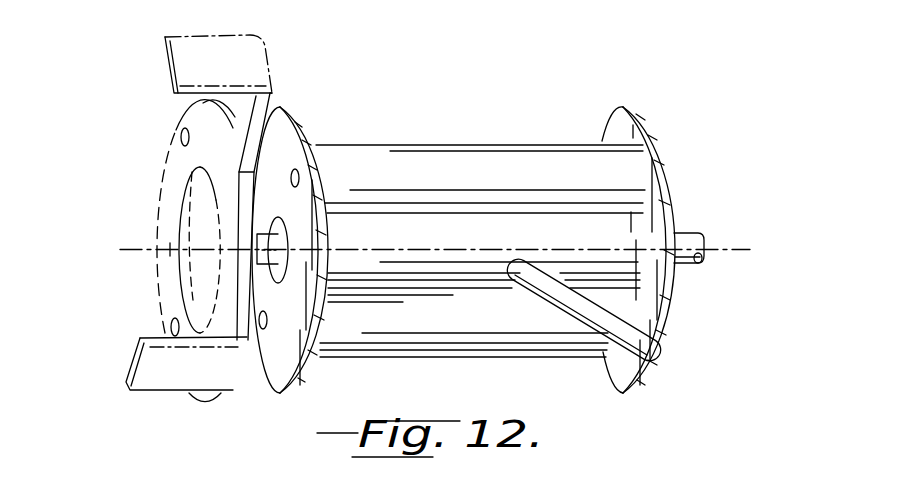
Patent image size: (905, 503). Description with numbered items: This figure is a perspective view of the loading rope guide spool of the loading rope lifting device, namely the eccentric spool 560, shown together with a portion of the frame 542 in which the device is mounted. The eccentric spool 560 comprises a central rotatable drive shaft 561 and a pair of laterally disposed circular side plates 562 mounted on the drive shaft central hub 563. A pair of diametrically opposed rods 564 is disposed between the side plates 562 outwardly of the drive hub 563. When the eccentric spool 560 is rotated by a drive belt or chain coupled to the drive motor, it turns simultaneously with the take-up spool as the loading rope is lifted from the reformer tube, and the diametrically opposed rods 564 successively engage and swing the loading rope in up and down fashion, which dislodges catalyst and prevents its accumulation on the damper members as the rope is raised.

The frame 542 is at (170, 65).
The eccentric spool 560 is at (568, 115).
The central rotatable drive shaft 561 is at (697, 238).
The circular side plates 562 is at (309, 131).
The drive shaft central hub 563 is at (621, 258).
The diametrically opposed rods 564 is at (478, 162).